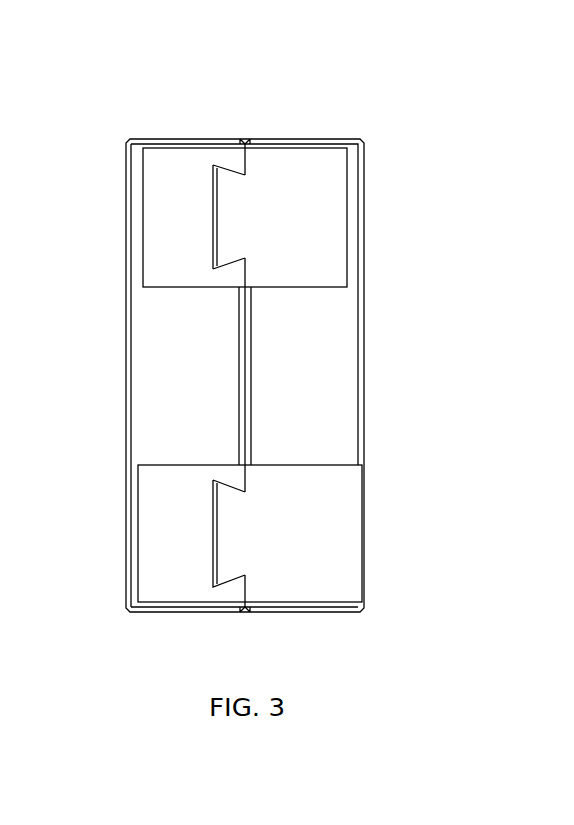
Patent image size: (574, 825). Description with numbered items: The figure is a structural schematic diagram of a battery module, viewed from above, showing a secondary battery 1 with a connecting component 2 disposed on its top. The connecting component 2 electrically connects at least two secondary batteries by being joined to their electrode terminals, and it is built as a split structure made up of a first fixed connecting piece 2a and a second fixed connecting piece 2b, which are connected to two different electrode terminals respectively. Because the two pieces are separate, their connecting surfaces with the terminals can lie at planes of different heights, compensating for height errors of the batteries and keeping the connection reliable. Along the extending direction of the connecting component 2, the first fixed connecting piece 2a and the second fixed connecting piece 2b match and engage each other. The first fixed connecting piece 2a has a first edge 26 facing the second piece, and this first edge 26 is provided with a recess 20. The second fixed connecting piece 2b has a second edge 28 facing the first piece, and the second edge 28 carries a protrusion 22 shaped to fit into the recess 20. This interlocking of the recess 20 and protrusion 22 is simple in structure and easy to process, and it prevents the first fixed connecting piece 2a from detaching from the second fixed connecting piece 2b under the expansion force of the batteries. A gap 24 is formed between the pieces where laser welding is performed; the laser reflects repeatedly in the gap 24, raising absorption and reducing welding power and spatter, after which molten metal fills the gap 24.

The secondary battery 1 is at (163, 399).
The connecting component 2 is at (305, 66).
The first fixed connecting piece 2a is at (162, 168).
The second fixed connecting piece 2b is at (320, 164).
The recess 20 is at (210, 186).
The protrusion 22 is at (222, 205).
The gap 24 is at (210, 244).
The first edge 26 is at (237, 279).
The second edge 28 is at (252, 279).